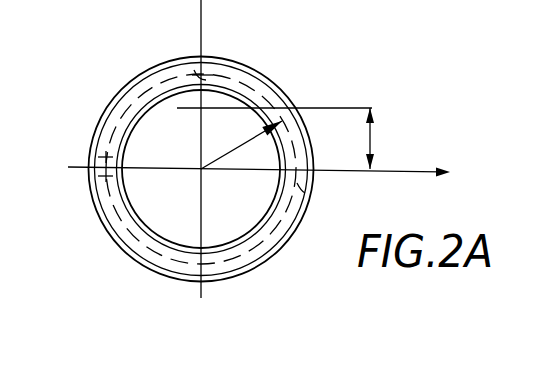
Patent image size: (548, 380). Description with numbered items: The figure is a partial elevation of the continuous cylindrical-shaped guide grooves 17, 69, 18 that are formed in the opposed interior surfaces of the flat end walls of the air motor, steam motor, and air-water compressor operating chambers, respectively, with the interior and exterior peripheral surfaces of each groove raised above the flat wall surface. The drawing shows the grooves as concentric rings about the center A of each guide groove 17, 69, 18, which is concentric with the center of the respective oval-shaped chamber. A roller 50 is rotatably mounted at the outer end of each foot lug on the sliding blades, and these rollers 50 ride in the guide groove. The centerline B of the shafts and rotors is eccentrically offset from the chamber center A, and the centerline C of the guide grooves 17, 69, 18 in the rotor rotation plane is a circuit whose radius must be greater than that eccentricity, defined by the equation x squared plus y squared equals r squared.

The guide groove 17 is at (247, 73).
The guide groove 69 is at (201, 169).
The guide groove 18 is at (201, 169).
The roller 50 is at (190, 58).
The center of guide groove A is at (199, 170).
The centerline of shafts and rotors B is at (195, 109).
The centerline of guide grooves C is at (297, 183).